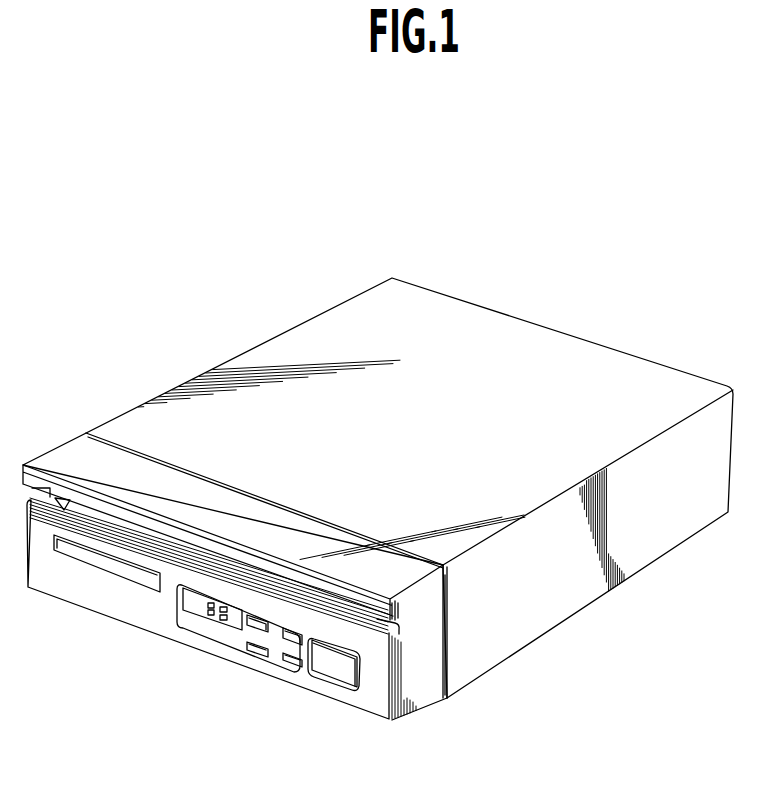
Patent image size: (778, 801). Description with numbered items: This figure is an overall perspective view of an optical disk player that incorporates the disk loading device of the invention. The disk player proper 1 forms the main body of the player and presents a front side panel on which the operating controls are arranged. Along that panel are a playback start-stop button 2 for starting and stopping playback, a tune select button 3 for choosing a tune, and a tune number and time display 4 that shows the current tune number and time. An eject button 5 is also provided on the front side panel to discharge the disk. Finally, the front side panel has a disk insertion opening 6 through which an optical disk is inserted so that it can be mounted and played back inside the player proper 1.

The disk player proper 1 is at (253, 372).
The playback start-stop button 2 is at (335, 667).
The tune select button 3 is at (255, 622).
The tune number and time display 4 is at (197, 603).
The eject button 5 is at (97, 565).
The disk insertion opening 6 is at (58, 500).